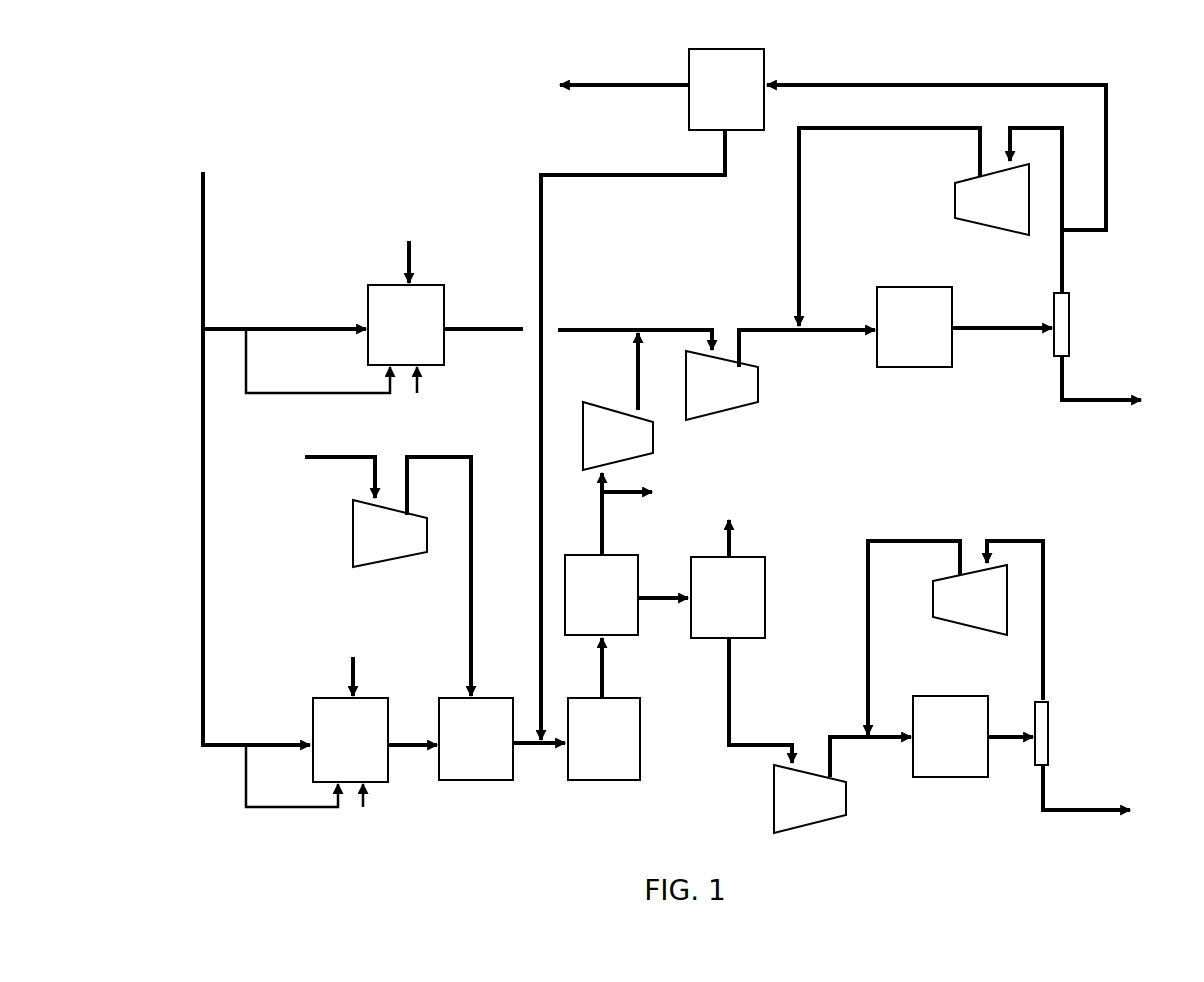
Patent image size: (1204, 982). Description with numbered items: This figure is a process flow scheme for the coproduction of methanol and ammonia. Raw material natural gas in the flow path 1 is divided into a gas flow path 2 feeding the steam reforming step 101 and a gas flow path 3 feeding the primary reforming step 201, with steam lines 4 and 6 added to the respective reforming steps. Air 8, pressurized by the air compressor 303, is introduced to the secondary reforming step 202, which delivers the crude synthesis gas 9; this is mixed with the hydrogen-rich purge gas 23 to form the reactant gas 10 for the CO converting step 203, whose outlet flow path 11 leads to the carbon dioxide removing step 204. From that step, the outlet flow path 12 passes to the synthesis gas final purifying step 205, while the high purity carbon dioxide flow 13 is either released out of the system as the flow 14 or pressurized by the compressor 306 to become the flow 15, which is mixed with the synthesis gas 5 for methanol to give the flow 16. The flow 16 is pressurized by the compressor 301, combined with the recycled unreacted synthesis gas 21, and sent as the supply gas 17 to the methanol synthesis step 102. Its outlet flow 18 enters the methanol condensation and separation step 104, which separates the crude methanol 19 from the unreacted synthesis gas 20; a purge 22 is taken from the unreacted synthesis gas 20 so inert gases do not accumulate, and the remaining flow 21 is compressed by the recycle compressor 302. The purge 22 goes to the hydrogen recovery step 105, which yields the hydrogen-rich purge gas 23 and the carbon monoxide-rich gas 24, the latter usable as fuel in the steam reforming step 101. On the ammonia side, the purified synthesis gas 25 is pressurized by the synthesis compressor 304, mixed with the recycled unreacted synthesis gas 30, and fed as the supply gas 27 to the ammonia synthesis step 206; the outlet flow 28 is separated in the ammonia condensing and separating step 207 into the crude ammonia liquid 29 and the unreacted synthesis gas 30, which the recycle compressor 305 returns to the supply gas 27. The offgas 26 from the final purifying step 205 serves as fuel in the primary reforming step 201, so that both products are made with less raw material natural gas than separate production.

The flow path 1 is at (203, 250).
The gas flow path 2 is at (232, 329).
The gas flow path 3 is at (203, 575).
The steam line 4 is at (418, 258).
The synthesis gas for methanol 5 is at (470, 329).
The steam line 6 is at (357, 672).
The air 8 is at (338, 456).
The crude synthesis gas 9 is at (526, 748).
The reactant gas for ammonia synthesis 10 is at (550, 748).
The flow path 11 is at (605, 682).
The flow path 12 is at (657, 595).
The high purity carbon dioxide flow 13 is at (600, 500).
The flow 14 is at (642, 490).
The carbon dioxide flow 15 is at (632, 357).
The flow 16 is at (665, 329).
The supply gas 17 is at (820, 329).
The outlet flow 18 is at (985, 328).
The crude methanol 19 is at (1078, 399).
The unreacted synthesis gas 20 is at (1068, 274).
The unreacted synthesis gas to be recycled 21 is at (1038, 127).
The purge gas 22 is at (928, 83).
The purge gas rich in hydrogen 23 is at (592, 175).
The gas rich in carbon monoxide 24 is at (420, 380).
The purified synthesis gas 25 is at (735, 680).
The offgas 26 is at (737, 537).
The supply gas 27 is at (893, 745).
The outlet flow 28 is at (998, 745).
The crude ammonia liquid 29 is at (1045, 797).
The unreacted synthesis gas 30 is at (1047, 625).
The steam reforming step 101 is at (345, 339).
The methanol synthesis step 102 is at (914, 327).
The methanol condensation and separation step 104 is at (1073, 328).
The hydrogen recovery step 105 is at (726, 89).
The primary reforming step 201 is at (375, 740).
The secondary reforming step 202 is at (476, 739).
The CO converting step 203 is at (604, 739).
The carbon dioxide removing step 204 is at (601, 595).
The synthesis gas final purifying step 205 is at (728, 597).
The ammonia synthesis step 206 is at (950, 736).
The ammonia condensing and separating step 207 is at (1052, 735).
The compressor 301 is at (722, 385).
The recycle compressor 302 is at (992, 199).
The air compressor 303 is at (412, 576).
The synthesis compressor 304 is at (810, 799).
The recycle compressor 305 is at (970, 600).
The compressor 306 is at (618, 436).